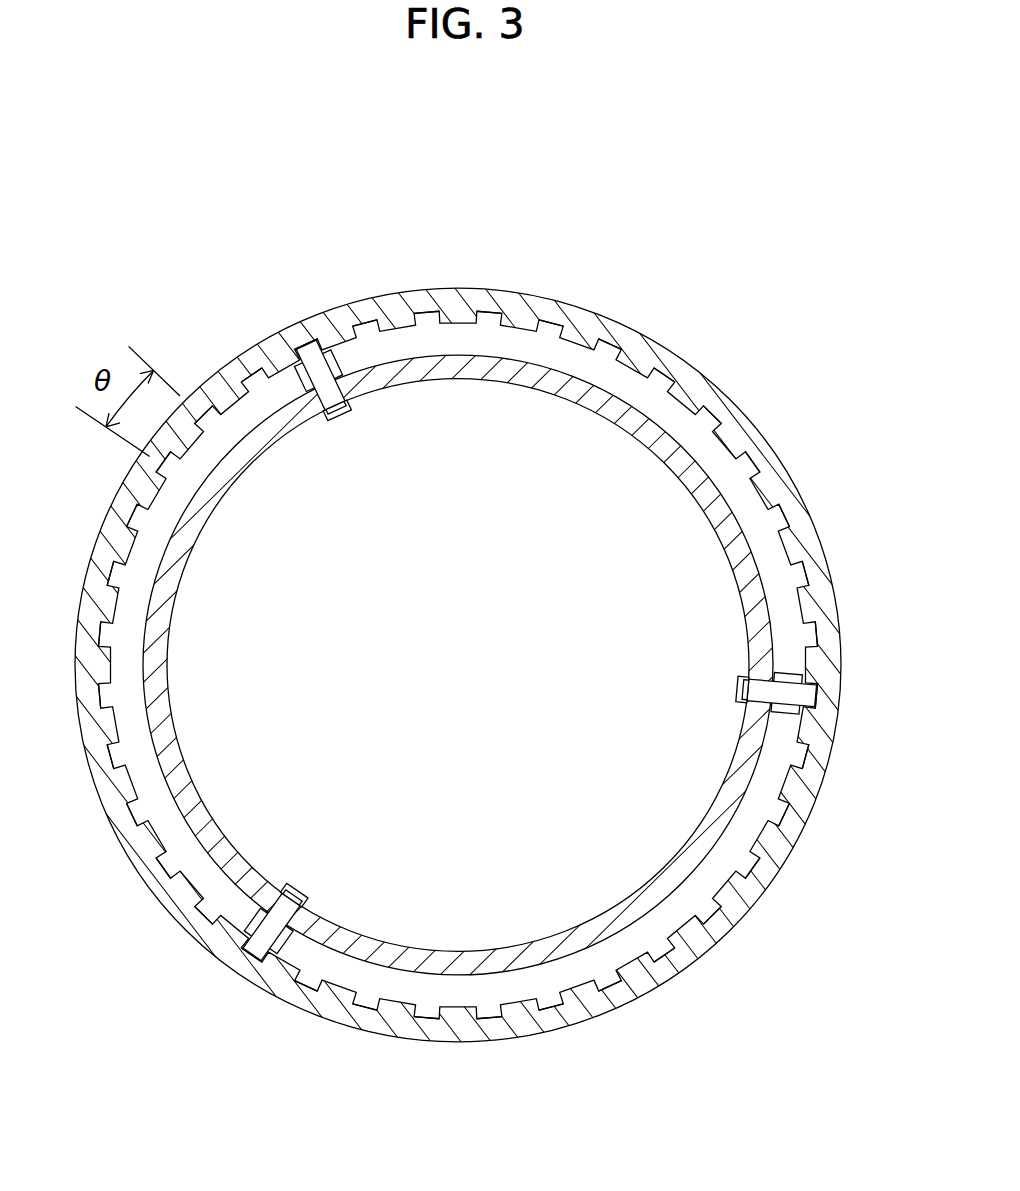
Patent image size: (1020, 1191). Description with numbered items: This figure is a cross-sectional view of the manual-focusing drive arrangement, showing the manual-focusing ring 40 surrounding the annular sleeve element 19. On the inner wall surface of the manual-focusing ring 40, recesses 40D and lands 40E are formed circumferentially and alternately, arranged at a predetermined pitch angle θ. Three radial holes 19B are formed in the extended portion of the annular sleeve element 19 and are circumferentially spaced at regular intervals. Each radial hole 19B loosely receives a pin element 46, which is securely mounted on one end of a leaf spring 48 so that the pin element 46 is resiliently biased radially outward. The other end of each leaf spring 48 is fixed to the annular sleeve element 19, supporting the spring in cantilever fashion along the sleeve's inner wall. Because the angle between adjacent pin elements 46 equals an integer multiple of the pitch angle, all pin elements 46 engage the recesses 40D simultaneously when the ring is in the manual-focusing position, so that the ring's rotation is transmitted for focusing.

The manual-focusing ring 40 is at (507, 653).
The recesses 40D is at (458, 644).
The lands 40E is at (458, 664).
The annular sleeve element 19 is at (458, 665).
The radial holes 19B is at (514, 653).
The pin element 46 is at (566, 670).
The leaf spring 48 is at (508, 653).